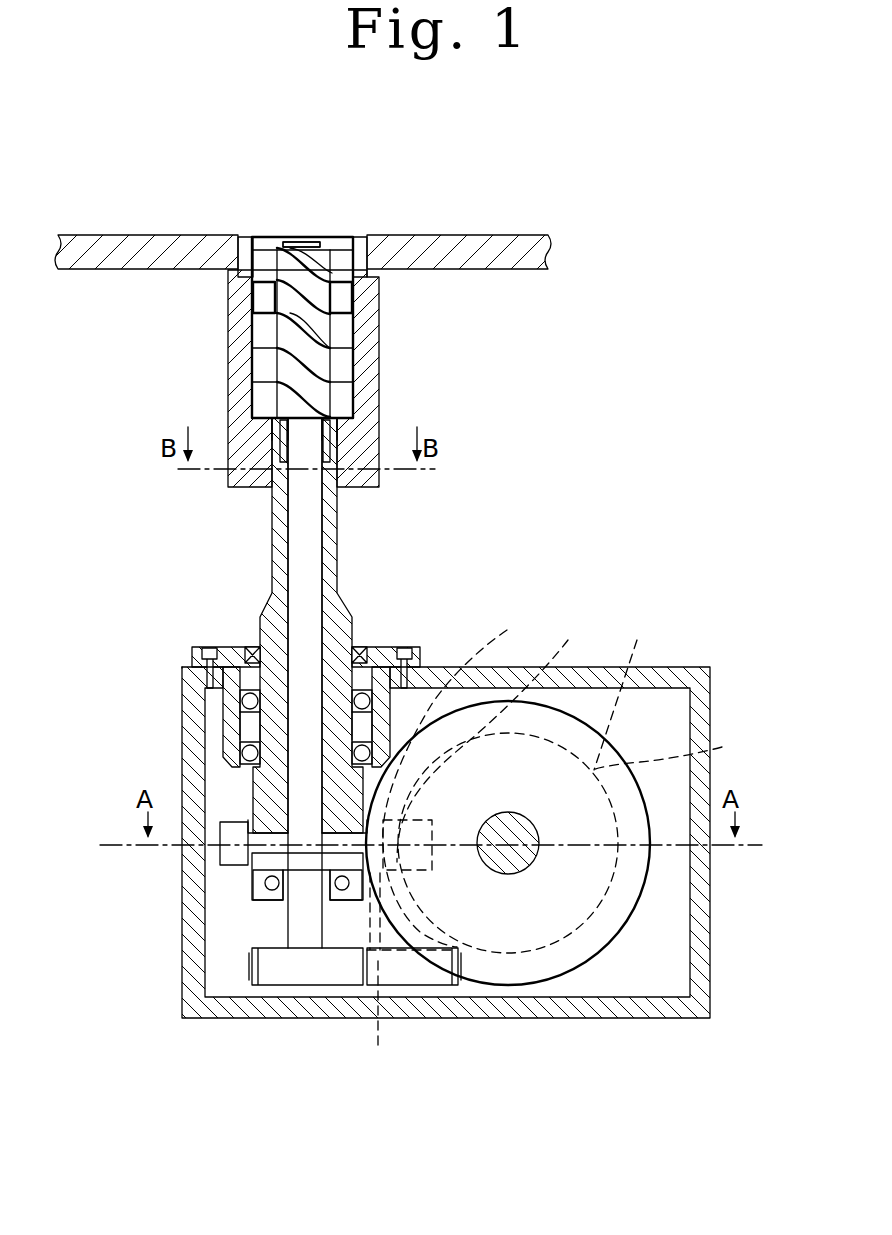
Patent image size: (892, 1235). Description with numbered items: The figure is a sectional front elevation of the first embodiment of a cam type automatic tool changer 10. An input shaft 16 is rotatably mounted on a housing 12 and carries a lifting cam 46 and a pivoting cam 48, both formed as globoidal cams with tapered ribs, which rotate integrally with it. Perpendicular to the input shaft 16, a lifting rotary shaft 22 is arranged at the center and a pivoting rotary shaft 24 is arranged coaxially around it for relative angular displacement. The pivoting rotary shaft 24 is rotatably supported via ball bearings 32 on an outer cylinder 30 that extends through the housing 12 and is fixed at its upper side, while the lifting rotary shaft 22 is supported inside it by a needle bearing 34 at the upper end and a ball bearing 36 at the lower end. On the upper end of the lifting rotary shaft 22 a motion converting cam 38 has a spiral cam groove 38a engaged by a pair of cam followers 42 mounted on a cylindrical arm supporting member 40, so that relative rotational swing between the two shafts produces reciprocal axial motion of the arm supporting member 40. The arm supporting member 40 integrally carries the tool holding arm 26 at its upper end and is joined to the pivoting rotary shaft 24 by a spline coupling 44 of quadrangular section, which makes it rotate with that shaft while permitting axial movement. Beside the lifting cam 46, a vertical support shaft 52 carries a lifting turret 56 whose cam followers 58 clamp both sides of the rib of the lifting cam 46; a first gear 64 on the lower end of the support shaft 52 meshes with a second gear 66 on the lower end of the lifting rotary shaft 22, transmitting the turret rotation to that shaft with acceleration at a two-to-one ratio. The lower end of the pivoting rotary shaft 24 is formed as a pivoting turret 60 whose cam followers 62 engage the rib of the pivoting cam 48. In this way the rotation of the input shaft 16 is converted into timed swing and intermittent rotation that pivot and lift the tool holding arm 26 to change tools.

The cam type automatic tool changer 10 is at (575, 408).
The housing 12 is at (711, 960).
The input shaft 16 is at (522, 860).
The lifting rotary shaft 22 is at (298, 575).
The pivoting rotary shaft 24 is at (278, 530).
The tool holding arm 26 is at (523, 243).
The outer cylinder 30 is at (395, 690).
The ball bearings 32 is at (240, 698).
The needle bearing 34 is at (272, 445).
The ball bearing 36 is at (265, 893).
The motion converting cam 38 is at (262, 340).
The cam groove 38a is at (318, 275).
The arm supporting member 40 is at (370, 391).
The cam followers 42 is at (262, 302).
The spline coupling 44 is at (340, 442).
The lifting cam 46 is at (561, 843).
The pivoting cam 48 is at (555, 965).
The support shaft 52 is at (500, 781).
The lifting turret 56 is at (494, 735).
The cam followers 58 is at (623, 689).
The pivoting turret 60 is at (270, 888).
The cam followers 62 is at (228, 850).
The first gear 64 is at (423, 973).
The second gear 66 is at (300, 975).